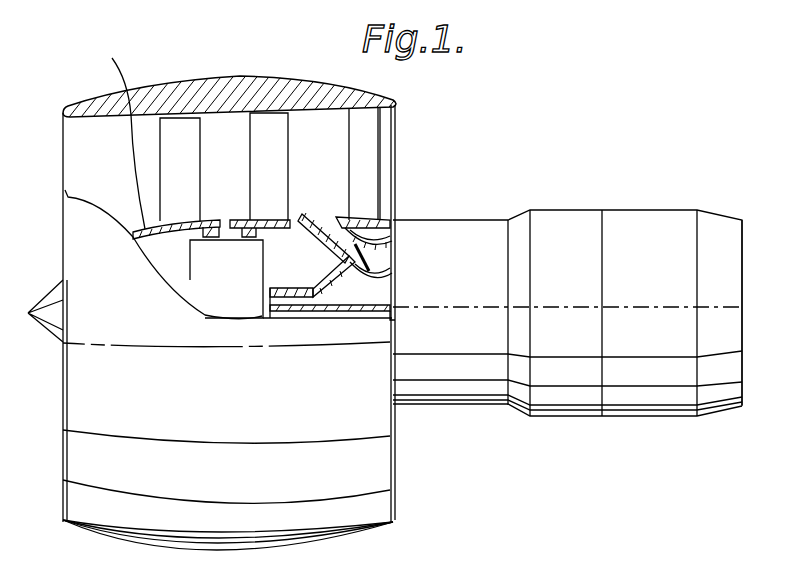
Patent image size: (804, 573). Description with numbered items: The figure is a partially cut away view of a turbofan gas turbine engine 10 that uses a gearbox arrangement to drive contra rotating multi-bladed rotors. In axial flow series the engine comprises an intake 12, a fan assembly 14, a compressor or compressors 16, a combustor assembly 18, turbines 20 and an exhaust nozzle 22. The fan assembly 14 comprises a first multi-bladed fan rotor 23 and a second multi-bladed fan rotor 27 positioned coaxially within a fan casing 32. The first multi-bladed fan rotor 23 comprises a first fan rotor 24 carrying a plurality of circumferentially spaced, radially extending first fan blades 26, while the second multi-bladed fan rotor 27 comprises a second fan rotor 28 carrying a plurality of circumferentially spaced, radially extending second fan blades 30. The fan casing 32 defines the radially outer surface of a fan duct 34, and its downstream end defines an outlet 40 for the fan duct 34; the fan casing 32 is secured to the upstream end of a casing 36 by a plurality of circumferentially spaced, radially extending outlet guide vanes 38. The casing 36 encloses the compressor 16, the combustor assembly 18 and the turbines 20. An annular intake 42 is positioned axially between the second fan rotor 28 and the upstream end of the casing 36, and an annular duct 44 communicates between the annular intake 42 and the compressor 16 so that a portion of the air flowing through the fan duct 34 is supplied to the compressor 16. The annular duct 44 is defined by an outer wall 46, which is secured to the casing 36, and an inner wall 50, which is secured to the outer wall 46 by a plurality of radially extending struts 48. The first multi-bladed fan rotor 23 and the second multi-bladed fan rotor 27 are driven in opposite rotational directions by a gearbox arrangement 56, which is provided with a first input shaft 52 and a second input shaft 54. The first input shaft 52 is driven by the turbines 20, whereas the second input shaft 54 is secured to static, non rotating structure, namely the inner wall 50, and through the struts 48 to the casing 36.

The turbofan gas turbine engine 10 is at (427, 430).
The intake 12 is at (80, 142).
The fan assembly 14 is at (372, 501).
The compressor 16 is at (483, 237).
The combustor assembly 18 is at (558, 232).
The turbines 20 is at (635, 230).
The exhaust nozzle 22 is at (710, 238).
The first multi-bladed fan rotor 23 is at (133, 223).
The first fan rotor 24 is at (112, 133).
The first fan blades 26 is at (173, 132).
The second multi-bladed fan rotor 27 is at (241, 118).
The second fan rotor 28 is at (282, 215).
The second fan blades 30 is at (273, 133).
The fan casing 32 is at (200, 84).
The fan duct 34 is at (240, 164).
The casing 36 is at (370, 222).
The outlet guide vanes 38 is at (370, 128).
The outlet 40 is at (387, 139).
The annular intake 42 is at (328, 228).
The annular duct 44 is at (380, 265).
The outer wall 46 is at (385, 250).
The struts 48 is at (357, 250).
The inner wall 50 is at (323, 238).
The first input shaft 52 is at (390, 320).
The second input shaft 54 is at (293, 297).
The gearbox arrangement 56 is at (200, 259).